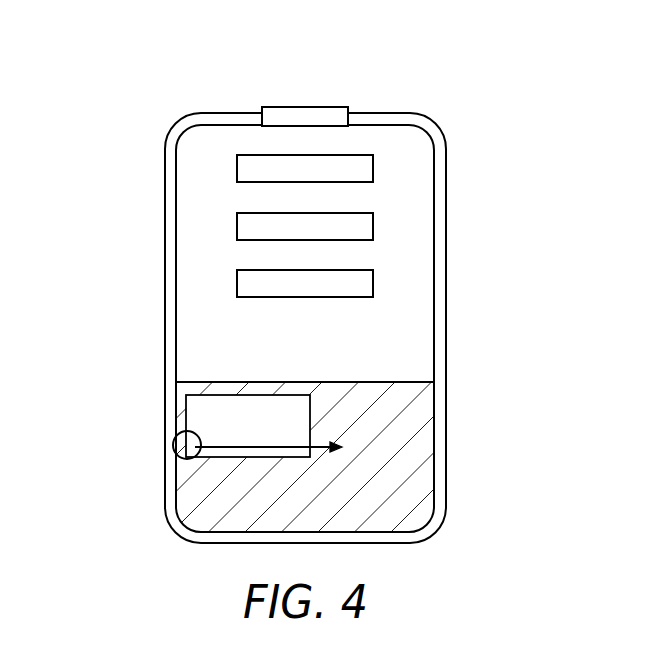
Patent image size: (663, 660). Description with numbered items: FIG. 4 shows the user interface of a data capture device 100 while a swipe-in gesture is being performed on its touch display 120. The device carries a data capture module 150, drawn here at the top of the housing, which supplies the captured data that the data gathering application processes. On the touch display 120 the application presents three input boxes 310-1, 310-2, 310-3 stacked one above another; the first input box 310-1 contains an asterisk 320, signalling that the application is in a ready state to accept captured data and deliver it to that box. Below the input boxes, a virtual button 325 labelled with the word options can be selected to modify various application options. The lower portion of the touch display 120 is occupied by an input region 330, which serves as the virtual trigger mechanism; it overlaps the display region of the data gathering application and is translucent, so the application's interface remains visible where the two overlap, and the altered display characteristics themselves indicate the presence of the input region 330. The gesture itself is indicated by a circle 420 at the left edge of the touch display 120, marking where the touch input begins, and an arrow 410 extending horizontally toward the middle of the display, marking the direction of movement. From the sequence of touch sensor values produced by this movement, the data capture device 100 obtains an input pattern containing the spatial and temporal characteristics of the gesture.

The data capture device 100 is at (78, 77).
The touch display 120 is at (412, 297).
The data capture module 150 is at (305, 107).
The input box 310-1 is at (373, 167).
The input box 310-2 is at (373, 224).
The input box 310-3 is at (373, 281).
The asterisk 320 is at (252, 165).
The virtual button 325 is at (261, 395).
The input region 330 is at (405, 427).
The arrow 410 is at (207, 455).
The circle 420 is at (173, 442).